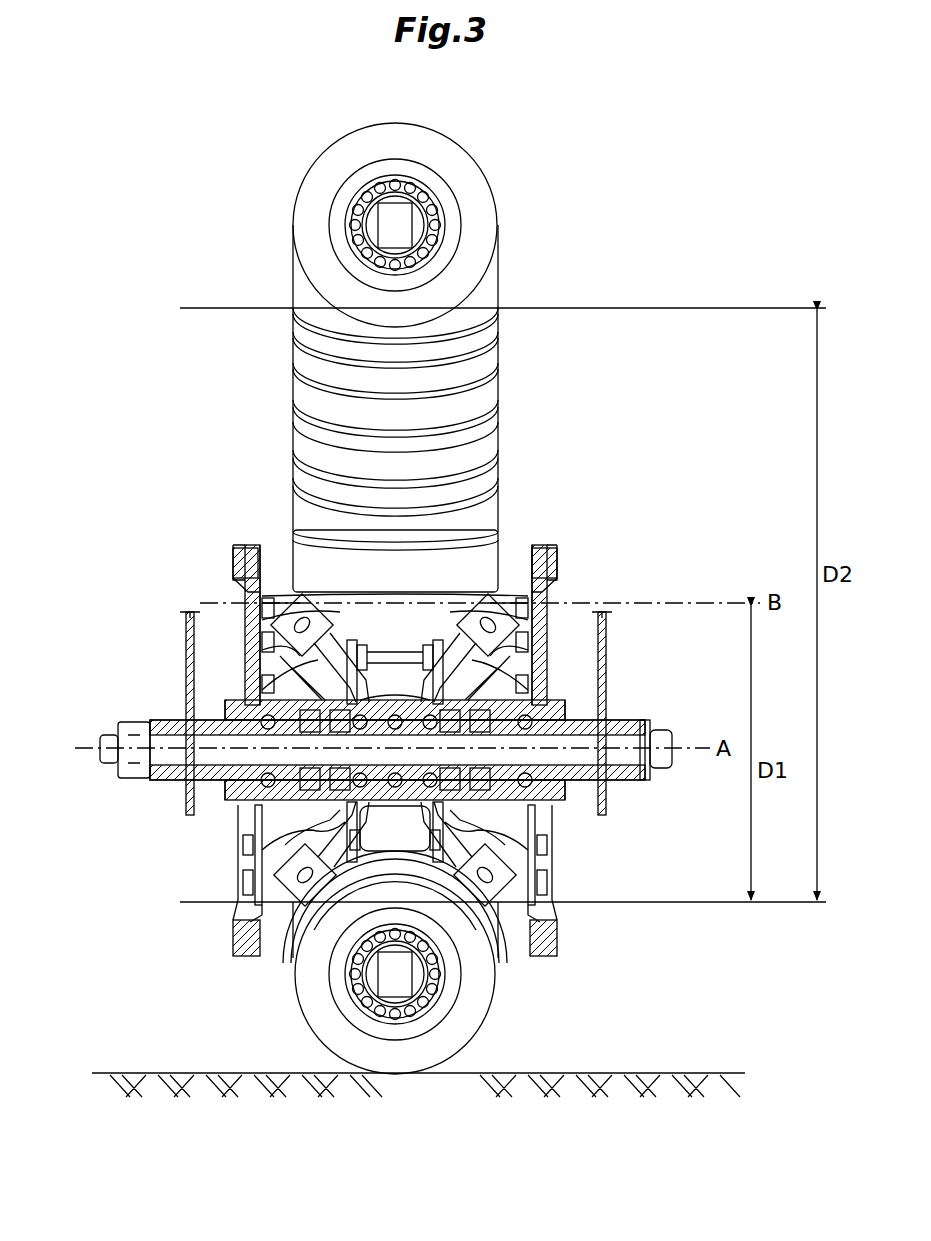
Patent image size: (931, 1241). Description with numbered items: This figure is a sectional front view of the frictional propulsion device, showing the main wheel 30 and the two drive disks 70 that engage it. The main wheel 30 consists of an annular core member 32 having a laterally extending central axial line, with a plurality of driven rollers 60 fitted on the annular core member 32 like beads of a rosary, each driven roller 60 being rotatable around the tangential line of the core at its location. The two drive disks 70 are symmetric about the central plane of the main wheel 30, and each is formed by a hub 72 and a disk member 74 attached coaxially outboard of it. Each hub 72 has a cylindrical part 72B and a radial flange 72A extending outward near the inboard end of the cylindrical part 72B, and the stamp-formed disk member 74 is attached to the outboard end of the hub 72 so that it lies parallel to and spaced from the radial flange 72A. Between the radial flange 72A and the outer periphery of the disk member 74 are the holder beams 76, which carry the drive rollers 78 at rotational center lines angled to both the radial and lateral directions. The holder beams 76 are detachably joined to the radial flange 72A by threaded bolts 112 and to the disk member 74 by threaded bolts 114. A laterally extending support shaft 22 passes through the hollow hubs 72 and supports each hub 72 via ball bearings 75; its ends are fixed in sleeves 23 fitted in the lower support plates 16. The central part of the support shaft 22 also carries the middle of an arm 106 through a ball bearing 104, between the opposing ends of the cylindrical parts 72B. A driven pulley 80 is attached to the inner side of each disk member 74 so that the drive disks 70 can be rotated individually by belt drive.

The lower support plate 16 is at (186, 705).
The support shaft 22 is at (664, 770).
The sleeve 23 is at (172, 782).
The main wheel 30 is at (478, 152).
The annular core member 32 is at (388, 215).
The driven roller 60 is at (486, 210).
The drive disk 70 is at (236, 548).
The hub 72 is at (262, 652).
The radial flange 72A is at (400, 660).
The cylindrical part 72B is at (262, 850).
The disk member 74 is at (262, 625).
The ball bearing 75 is at (240, 700).
The holder beam 76 is at (262, 600).
The drive roller 78 is at (470, 598).
The driven pulley 80 is at (233, 565).
The ball bearing 104 is at (398, 655).
The arm 106 is at (398, 800).
The threaded bolt 112 is at (362, 645).
The threaded bolt 114 is at (188, 612).